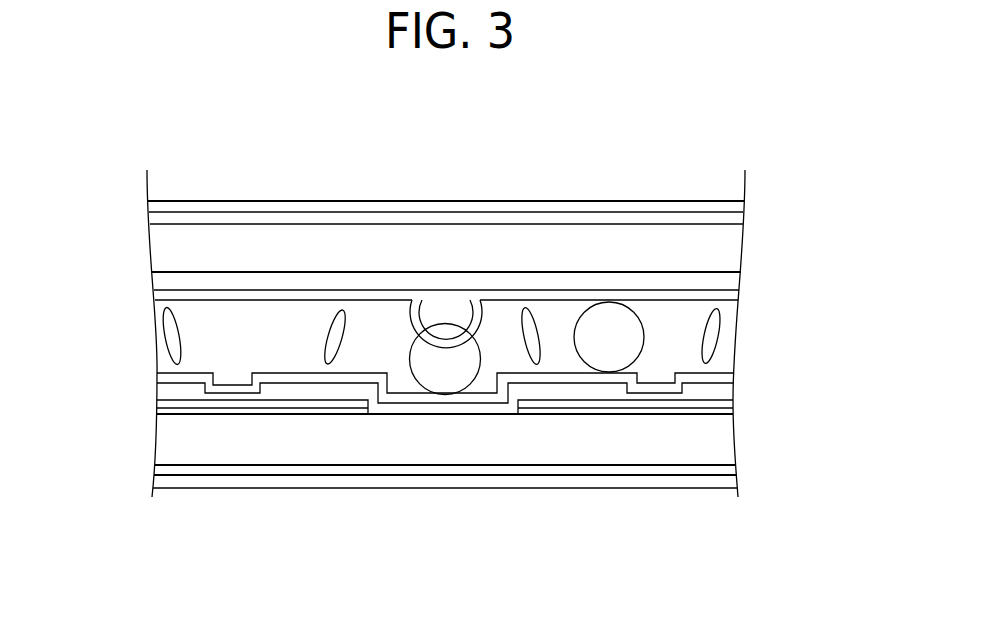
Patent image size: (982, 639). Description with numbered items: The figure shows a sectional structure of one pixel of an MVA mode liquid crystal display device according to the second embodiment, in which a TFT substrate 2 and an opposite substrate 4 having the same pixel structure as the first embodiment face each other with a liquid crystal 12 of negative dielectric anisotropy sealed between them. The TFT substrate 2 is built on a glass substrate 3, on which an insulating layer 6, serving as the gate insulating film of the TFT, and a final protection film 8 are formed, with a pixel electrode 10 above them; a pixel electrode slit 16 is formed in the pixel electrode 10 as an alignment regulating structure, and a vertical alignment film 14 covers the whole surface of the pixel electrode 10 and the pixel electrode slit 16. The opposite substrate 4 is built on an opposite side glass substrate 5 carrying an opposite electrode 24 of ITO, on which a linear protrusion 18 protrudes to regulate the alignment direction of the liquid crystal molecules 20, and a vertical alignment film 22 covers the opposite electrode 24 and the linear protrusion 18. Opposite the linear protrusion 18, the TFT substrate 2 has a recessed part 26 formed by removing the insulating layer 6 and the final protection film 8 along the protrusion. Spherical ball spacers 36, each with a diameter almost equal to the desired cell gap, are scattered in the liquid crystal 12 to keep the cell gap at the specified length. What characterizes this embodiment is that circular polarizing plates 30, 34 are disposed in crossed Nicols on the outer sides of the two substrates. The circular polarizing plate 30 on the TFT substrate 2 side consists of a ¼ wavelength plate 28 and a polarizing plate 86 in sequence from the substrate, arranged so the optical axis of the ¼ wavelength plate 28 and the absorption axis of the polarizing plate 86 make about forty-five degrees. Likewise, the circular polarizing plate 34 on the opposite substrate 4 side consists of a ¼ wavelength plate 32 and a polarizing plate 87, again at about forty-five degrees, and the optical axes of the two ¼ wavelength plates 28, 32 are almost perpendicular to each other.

The TFT substrate 2 is at (150, 448).
The glass substrate 3 is at (733, 437).
The opposite substrate 4 is at (135, 242).
The opposite side glass substrate 5 is at (745, 248).
The insulating layer 6 is at (157, 410).
The final protection film 8 is at (157, 400).
The pixel electrode 10 is at (733, 387).
The liquid crystal 12 is at (157, 362).
The vertical alignment film 14 is at (735, 375).
The pixel electrode slit 16 is at (230, 365).
The linear protrusion 18 is at (446, 305).
The liquid crystal molecule 20 is at (163, 334).
The vertical alignment film 22 is at (148, 296).
The opposite electrode 24 is at (147, 283).
The recessed part 26 is at (397, 380).
The ¼ wavelength plate 28 is at (645, 470).
The circular polarizing plate 30 is at (622, 581).
The ¼ wavelength plate 32 is at (279, 218).
The circular polarizing plate 34 is at (360, 122).
The ball spacer 36 is at (430, 374).
The polarizing plate 86 is at (698, 480).
The polarizing plate 87 is at (330, 203).